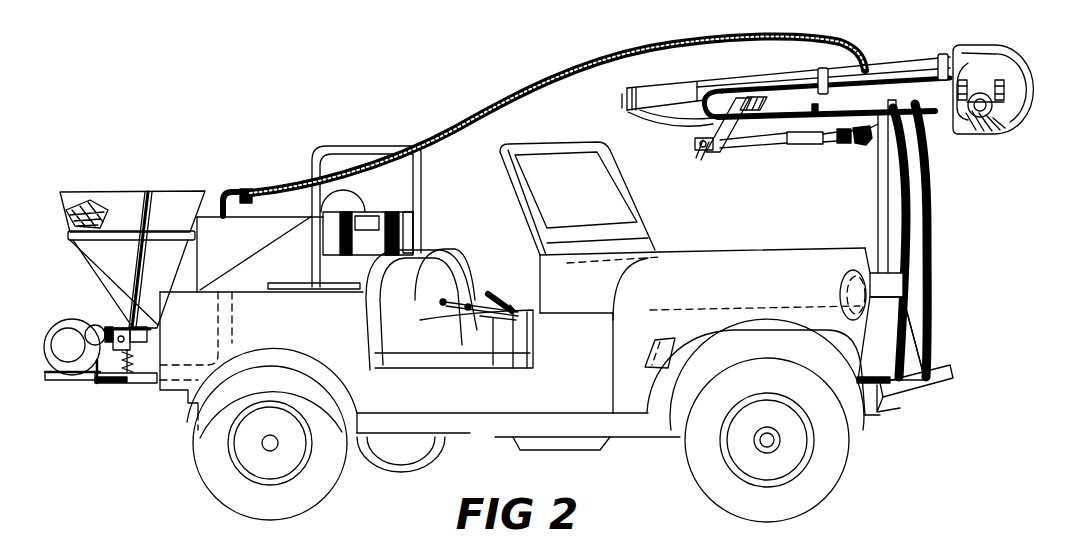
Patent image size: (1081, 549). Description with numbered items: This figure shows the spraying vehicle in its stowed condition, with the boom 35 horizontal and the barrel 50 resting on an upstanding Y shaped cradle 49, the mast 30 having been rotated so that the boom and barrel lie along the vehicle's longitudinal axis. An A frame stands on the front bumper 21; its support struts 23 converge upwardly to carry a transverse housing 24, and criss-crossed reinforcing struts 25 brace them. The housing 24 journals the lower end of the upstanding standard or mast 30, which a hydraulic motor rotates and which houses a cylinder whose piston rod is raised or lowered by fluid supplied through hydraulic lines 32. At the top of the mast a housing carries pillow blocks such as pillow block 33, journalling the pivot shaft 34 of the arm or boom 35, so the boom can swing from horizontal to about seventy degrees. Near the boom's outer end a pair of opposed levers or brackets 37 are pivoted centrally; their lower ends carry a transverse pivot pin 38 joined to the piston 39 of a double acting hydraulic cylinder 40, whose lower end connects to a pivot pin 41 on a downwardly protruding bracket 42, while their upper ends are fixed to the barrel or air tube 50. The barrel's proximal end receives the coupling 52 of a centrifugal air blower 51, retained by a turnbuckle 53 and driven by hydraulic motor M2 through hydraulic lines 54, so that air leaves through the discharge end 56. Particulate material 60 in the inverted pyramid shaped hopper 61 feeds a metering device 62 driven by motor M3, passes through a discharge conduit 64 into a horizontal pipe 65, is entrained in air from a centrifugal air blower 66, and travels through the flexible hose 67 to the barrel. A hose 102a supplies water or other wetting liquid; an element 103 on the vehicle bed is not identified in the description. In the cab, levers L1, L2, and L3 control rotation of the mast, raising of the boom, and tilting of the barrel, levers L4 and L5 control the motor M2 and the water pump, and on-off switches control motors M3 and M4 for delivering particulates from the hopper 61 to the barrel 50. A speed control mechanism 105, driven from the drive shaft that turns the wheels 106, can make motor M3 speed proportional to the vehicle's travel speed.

The front bumper 21 is at (920, 390).
The support struts 23 is at (922, 332).
The transverse housing 24 is at (872, 280).
The reinforcing struts 25 is at (925, 362).
The upstanding standard 30 is at (888, 188).
The hydraulic lines 32 is at (935, 108).
The pillow block 33 is at (920, 136).
The pivot shaft 34 is at (905, 112).
The arm or boom 35 is at (860, 114).
The levers or brackets 37 is at (819, 121).
The transverse pivot pin 38 is at (699, 160).
The piston rod 39 is at (757, 147).
The double acting hydraulic cylinder 40 is at (800, 145).
The pivot pin 41 is at (868, 136).
The bracket 42 is at (840, 143).
The Y shaped cradle 49 is at (815, 112).
The barrel or air tube 50 is at (655, 90).
The centrifugal air blower 51 is at (1026, 103).
The coupling 52 is at (960, 98).
The turnbuckle 53 is at (920, 58).
The hydraulic lines 54 is at (818, 75).
The discharge end 56 is at (626, 108).
The particulate material 60 is at (100, 224).
The hopper 61 is at (147, 192).
The metering device 62 is at (147, 333).
The discharge conduit 64 is at (135, 358).
The pipe 65 is at (150, 383).
The centrifugal air blower 66 is at (52, 374).
The flexible hose 67 is at (440, 148).
The hose 102a is at (685, 128).
The pump 103 is at (398, 210).
The speed control mechanism 105 is at (660, 338).
The wheels 106 is at (215, 480).
The lever L1 is at (466, 304).
The lever L2 is at (490, 294).
The lever L3 is at (510, 304).
The lever L4 is at (441, 302).
The on-off lever L5 is at (480, 316).
The hydraulic motor M2 is at (980, 117).
The motor M3 is at (84, 323).
The motor M4 is at (106, 326).